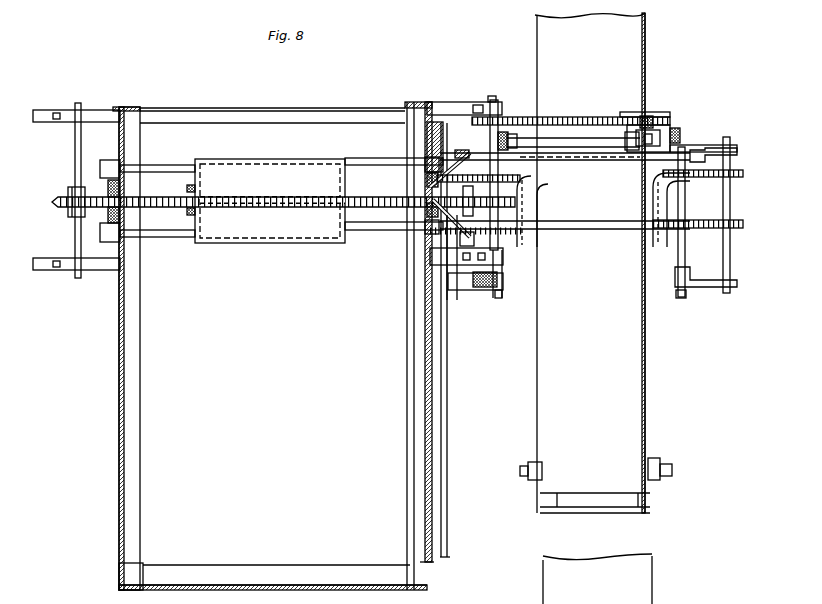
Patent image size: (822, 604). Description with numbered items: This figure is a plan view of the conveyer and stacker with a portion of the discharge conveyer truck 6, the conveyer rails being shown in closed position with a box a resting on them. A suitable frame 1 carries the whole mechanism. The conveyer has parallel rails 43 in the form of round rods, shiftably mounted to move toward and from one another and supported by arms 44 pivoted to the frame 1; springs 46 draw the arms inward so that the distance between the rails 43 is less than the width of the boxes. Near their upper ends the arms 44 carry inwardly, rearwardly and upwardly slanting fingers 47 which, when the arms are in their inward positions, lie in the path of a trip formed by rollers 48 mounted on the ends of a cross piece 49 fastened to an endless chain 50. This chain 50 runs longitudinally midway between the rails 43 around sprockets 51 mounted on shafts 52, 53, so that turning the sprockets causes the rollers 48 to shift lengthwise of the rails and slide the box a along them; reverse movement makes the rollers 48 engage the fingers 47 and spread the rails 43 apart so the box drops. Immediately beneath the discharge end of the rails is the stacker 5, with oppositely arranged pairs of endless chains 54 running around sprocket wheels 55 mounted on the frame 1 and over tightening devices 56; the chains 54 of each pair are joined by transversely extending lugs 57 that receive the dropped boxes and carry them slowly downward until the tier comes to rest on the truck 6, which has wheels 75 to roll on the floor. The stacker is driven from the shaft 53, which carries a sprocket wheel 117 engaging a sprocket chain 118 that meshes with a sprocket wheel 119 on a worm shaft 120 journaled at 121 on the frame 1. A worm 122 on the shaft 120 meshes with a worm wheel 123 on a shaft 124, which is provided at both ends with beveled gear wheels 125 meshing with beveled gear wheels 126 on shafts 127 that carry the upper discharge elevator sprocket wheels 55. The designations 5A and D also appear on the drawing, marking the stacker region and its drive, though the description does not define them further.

The frame 1 is at (117, 381).
The box a is at (270, 201).
The stacker 5 is at (740, 190).
The carriage part 5A is at (740, 170).
The drive D is at (690, 125).
The truck 6 is at (636, 388).
The rails 43 is at (168, 166).
The arms 44 is at (105, 165).
The springs 46 is at (108, 186).
The fingers 47 is at (445, 150).
The rollers 48 is at (187, 188).
The cross piece 49 is at (200, 195).
The endless chain 50 is at (375, 200).
The sprockets 51 is at (53, 201).
The shaft 52 is at (75, 231).
The shaft 53 is at (500, 250).
The endless chains 54 is at (473, 232).
The sprocket wheels 55 is at (682, 178).
The tightening devices 56 is at (465, 291).
The lugs 57 is at (532, 210).
The wheels 75 is at (528, 465).
The sprocket wheel 117 is at (466, 101).
The sprocket chain 118 is at (572, 116).
The sprocket wheel 119 is at (660, 128).
The worm shaft 120 is at (646, 118).
The journal 121 is at (636, 116).
The worm 122 is at (632, 161).
The worm wheel 123 is at (636, 134).
The shaft 124 is at (565, 130).
The beveled gear wheels 125 is at (503, 132).
The beveled gear wheels 126 is at (482, 152).
The shafts 127 is at (506, 296).